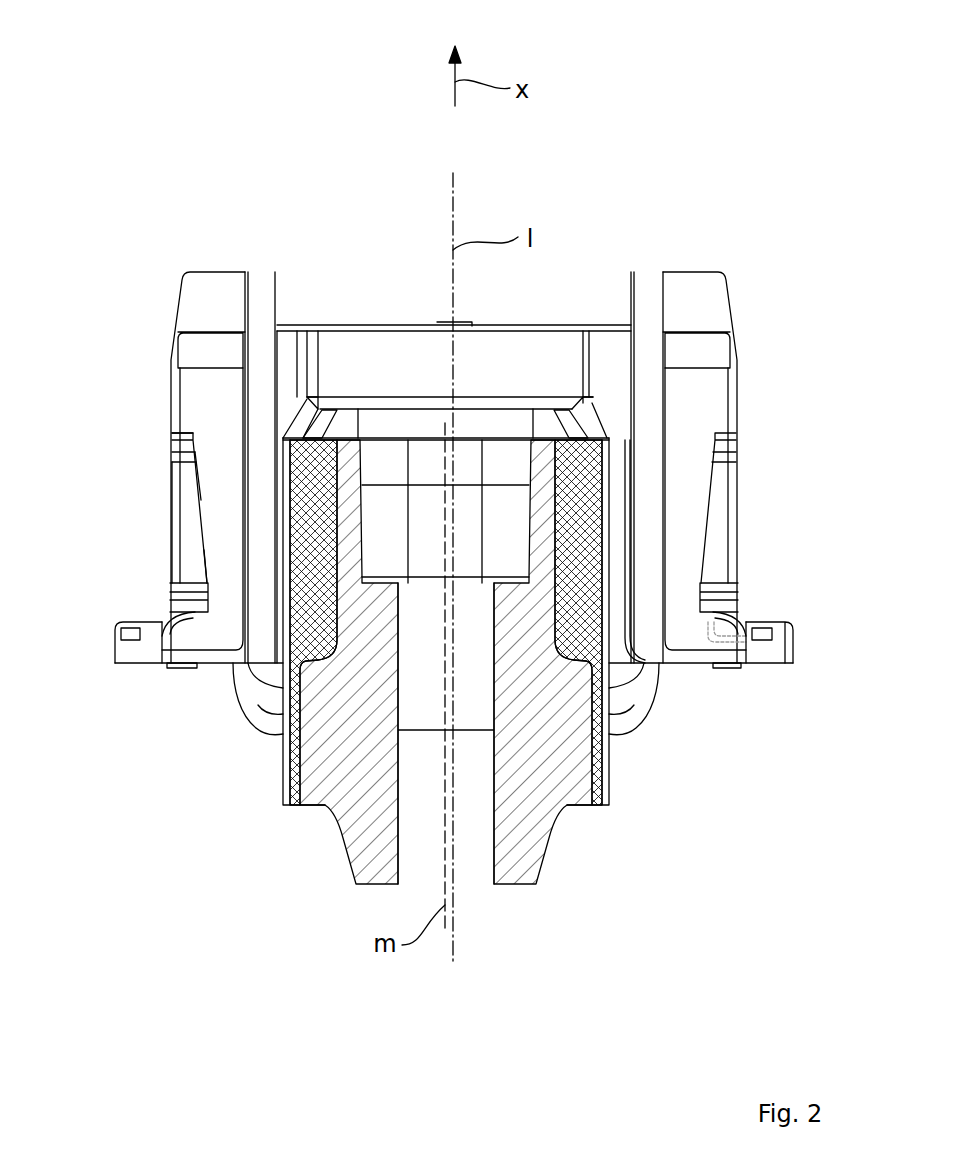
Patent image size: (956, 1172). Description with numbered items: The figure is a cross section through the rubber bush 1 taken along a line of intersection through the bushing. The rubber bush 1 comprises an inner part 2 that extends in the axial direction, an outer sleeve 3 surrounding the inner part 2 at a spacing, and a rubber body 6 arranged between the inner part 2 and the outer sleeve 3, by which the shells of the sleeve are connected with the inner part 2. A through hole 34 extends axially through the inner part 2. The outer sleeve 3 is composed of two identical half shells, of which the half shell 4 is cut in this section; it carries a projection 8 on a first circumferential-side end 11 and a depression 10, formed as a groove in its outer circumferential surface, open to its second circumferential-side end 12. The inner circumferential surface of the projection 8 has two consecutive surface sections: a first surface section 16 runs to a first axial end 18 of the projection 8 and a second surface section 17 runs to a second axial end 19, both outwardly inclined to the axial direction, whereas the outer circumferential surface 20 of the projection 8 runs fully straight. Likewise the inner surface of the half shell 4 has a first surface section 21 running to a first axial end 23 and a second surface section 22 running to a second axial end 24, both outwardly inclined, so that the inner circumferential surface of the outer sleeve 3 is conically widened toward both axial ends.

The rubber bush 1 is at (183, 118).
The inner part 2 is at (537, 827).
The outer sleeve 3 is at (742, 405).
The half shell 4 is at (188, 392).
The rubber body 6 is at (262, 700).
The projection 8 is at (190, 540).
The depression 10 is at (718, 528).
The first circumferential-side end 11 is at (207, 640).
The second circumferential-side end 12 is at (685, 640).
The first surface section 16 is at (208, 503).
The second surface section 17 is at (208, 603).
The first axial end 18 is at (185, 437).
The second axial end 19 is at (160, 633).
The outer circumferential surface 20 is at (173, 508).
The first surface section 21 is at (660, 400).
The second surface section 22 is at (665, 629).
The first axial end 23 is at (695, 332).
The second axial end 24 is at (723, 655).
The through hole 34 is at (478, 868).